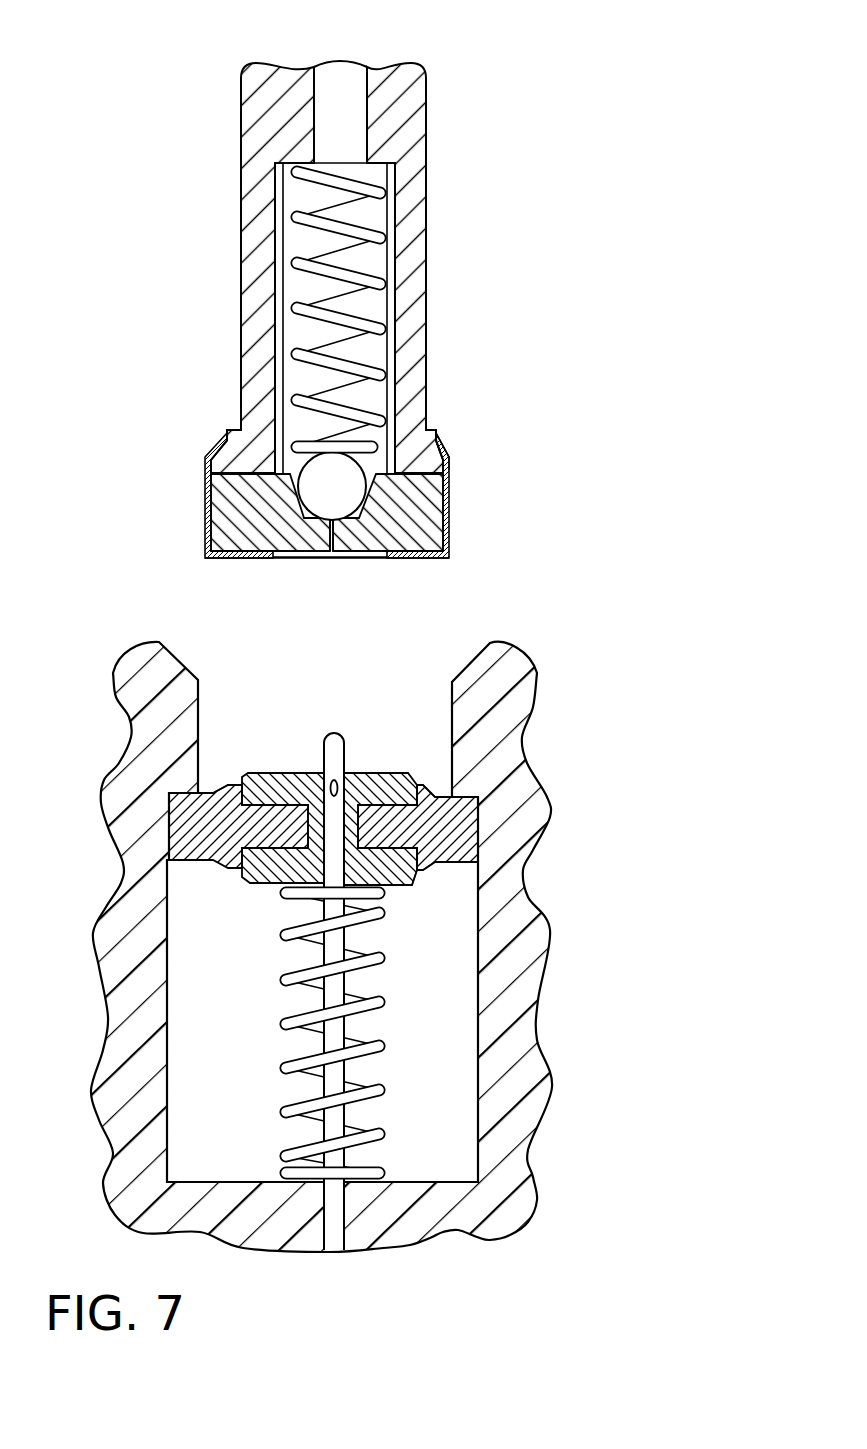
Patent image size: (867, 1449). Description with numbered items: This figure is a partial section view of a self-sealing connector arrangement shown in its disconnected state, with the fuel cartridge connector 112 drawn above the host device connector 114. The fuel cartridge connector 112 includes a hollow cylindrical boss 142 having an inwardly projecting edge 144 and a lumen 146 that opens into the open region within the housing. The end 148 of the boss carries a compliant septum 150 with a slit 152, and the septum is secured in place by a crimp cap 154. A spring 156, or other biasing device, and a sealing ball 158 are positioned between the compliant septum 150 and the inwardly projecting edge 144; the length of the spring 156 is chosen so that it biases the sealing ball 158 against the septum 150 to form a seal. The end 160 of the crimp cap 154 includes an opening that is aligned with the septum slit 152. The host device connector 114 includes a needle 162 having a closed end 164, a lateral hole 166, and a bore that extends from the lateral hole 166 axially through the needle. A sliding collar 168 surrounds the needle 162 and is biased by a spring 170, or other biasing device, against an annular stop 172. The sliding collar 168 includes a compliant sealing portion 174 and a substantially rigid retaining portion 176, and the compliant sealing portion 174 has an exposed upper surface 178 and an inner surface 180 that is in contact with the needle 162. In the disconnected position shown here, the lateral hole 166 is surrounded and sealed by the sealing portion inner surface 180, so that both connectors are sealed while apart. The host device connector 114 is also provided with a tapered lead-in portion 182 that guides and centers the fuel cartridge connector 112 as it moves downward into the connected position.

The fuel cartridge connector 112 is at (335, 314).
The host device connector 114 is at (346, 925).
The hollow cylindrical boss 142 is at (242, 214).
The inwardly projecting edge 144 is at (387, 162).
The lumen 146 is at (345, 68).
The end 148 is at (415, 438).
The compliant septum 150 is at (237, 497).
The slit 152 is at (337, 537).
The crimp cap 154 is at (450, 468).
The spring 156 is at (337, 182).
The sealing ball 158 is at (356, 499).
The end 160 is at (433, 560).
The needle 162 is at (338, 959).
The closed end 164 is at (335, 733).
The lateral hole 166 is at (329, 781).
The sliding collar 168 is at (474, 783).
The spring 170 is at (358, 920).
The annular stop 172 is at (181, 796).
The compliant sealing portion 174 is at (412, 876).
The substantially rigid retaining portion 176 is at (465, 866).
The exposed upper surface 178 is at (375, 773).
The inner surface 180 is at (308, 827).
The tapered lead-in portion 182 is at (174, 653).